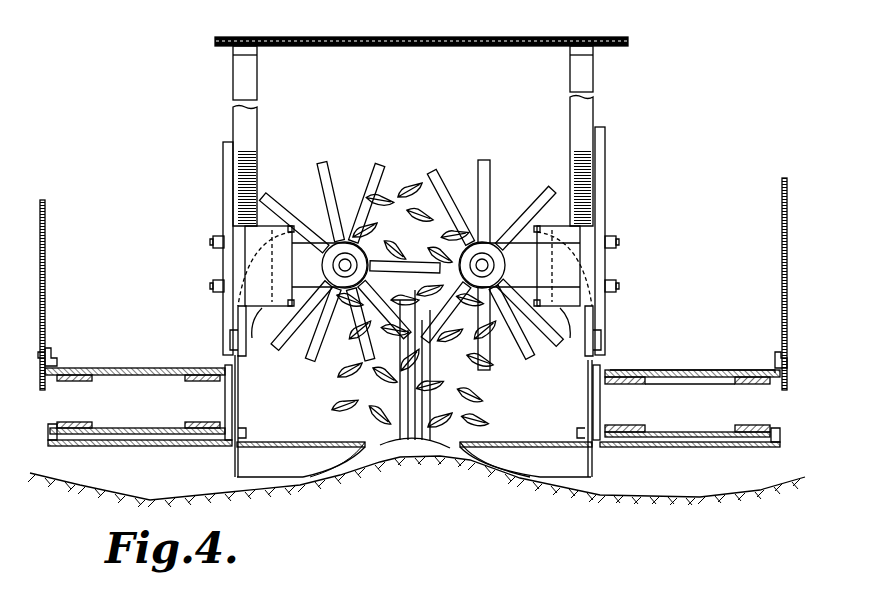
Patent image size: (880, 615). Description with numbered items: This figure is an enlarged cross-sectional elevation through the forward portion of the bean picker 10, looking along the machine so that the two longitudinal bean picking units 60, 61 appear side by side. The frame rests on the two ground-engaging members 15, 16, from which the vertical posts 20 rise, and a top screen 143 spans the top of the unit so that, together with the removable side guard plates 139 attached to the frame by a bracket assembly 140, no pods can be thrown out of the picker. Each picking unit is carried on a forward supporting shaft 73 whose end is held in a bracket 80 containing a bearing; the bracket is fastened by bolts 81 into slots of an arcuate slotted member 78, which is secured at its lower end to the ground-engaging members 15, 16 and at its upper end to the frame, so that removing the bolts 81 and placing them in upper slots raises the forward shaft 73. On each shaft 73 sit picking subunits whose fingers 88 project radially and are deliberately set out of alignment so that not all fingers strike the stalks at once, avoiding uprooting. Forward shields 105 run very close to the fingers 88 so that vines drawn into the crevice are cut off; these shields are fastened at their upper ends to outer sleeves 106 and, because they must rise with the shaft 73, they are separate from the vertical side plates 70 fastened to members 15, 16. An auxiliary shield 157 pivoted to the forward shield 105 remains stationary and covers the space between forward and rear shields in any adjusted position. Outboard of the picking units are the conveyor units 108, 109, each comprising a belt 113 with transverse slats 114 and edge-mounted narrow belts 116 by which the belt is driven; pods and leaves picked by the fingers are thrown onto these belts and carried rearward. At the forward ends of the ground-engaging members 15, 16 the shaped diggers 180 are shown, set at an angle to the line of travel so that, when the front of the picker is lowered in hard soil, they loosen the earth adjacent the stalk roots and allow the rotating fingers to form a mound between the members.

The bean picker 10 is at (612, 306).
The ground-engaging member 15 is at (668, 448).
The ground-engaging member 16 is at (158, 448).
The vertical post 20 is at (232, 122).
The bean picking unit 60 is at (512, 222).
The bean picking unit 61 is at (312, 222).
The vertical side plate 70 is at (239, 412).
The forward supporting shaft 73 is at (342, 265).
The arcuate slotted member 78 is at (223, 187).
The bracket 80 is at (415, 295).
The bolt 81 is at (212, 284).
The finger 88 is at (436, 168).
The shield 105 is at (345, 198).
The outer sleeve 106 is at (342, 368).
The conveyor unit 108 is at (700, 370).
The conveyor unit 109 is at (108, 365).
The belt 113 is at (674, 384).
The slat 114 is at (672, 367).
The narrow belt 116 is at (90, 381).
The side guard plate 139 is at (46, 212).
The bracket assembly 140 is at (54, 352).
The top screen 143 is at (505, 37).
The auxiliary shield 157 is at (224, 397).
The digger 180 is at (304, 476).